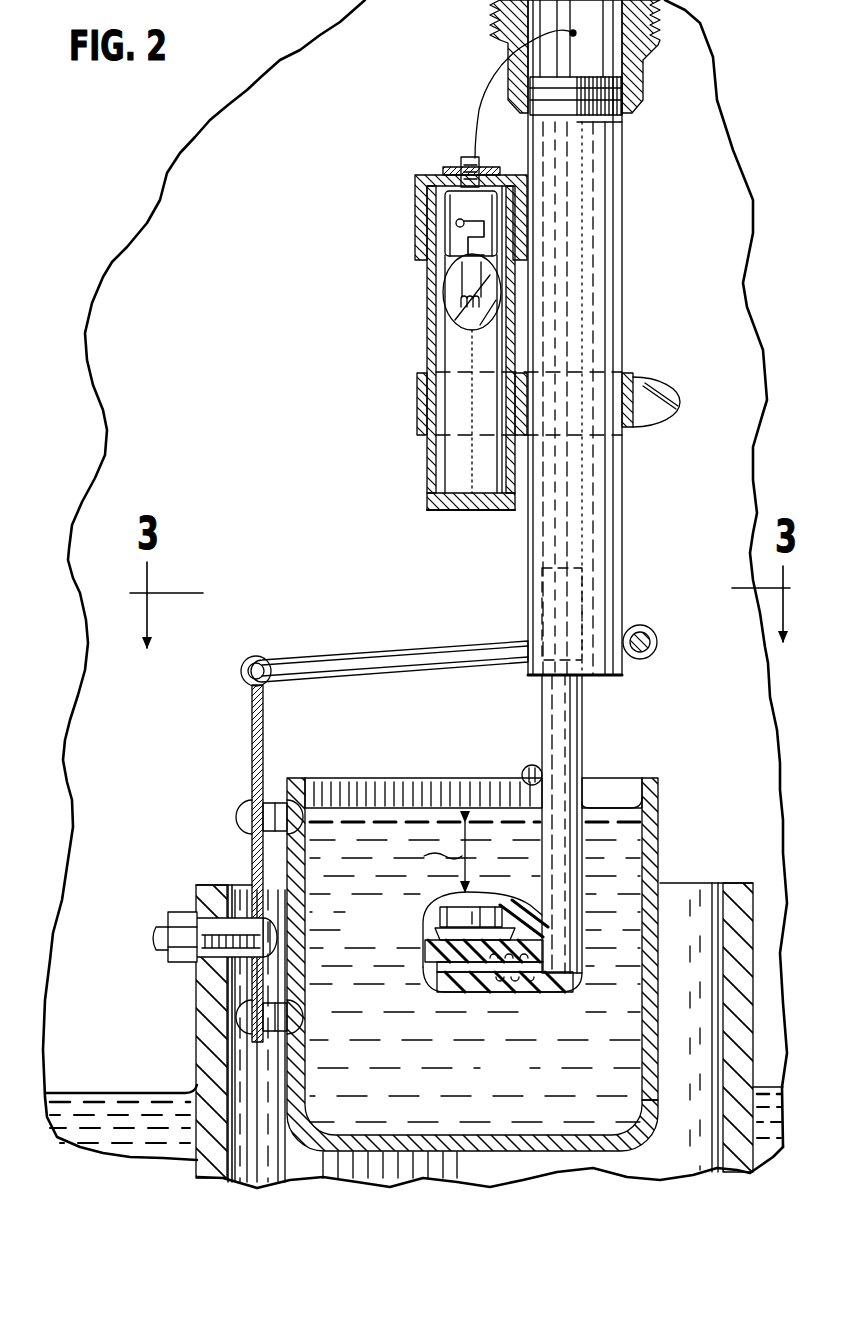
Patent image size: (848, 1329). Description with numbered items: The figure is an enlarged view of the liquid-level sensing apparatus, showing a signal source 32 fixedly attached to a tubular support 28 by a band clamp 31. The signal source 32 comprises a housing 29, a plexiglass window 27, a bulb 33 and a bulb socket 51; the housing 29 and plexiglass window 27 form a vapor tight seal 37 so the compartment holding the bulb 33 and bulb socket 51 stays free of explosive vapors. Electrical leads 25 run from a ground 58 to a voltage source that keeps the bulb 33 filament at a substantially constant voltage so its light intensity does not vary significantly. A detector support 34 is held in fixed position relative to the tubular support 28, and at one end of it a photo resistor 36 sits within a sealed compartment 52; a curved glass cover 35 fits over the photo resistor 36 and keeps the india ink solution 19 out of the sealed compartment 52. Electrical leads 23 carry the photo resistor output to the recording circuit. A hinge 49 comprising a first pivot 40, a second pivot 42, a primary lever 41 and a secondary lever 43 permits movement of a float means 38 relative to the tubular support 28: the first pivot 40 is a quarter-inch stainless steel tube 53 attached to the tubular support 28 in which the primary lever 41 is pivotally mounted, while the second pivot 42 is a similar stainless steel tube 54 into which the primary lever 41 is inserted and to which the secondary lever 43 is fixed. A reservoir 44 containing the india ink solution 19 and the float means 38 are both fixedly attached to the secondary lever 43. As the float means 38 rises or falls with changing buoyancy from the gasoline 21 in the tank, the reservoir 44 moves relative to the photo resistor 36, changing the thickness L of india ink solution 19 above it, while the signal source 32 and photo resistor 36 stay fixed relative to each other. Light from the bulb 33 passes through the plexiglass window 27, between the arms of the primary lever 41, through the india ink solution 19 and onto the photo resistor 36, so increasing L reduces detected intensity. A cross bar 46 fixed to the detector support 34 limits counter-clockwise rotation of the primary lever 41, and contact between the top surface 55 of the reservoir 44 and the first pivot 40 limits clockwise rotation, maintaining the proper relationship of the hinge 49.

The india ink solution 19 is at (524, 1074).
The gasoline 21 is at (135, 1093).
The electrical leads 23 is at (525, 975).
The electrical leads 25 is at (463, 157).
The plexiglass window 27 is at (490, 512).
The tubular support 28 is at (622, 273).
The housing 29 is at (427, 468).
The band clamp 31 is at (420, 405).
The signal source 32 is at (428, 340).
The bulb 33 is at (443, 298).
The detector support 34 is at (542, 705).
The curved glass cover 35 is at (466, 940).
The photo resistor 36 is at (490, 902).
The vapor tight seal 37 is at (430, 511).
The float means 38 is at (196, 1031).
The first pivot 40 is at (660, 638).
The primary lever 41 is at (412, 650).
The second pivot 42 is at (349, 820).
The secondary lever 43 is at (252, 757).
The reservoir 44 is at (405, 776).
The cross bar 46 is at (525, 768).
The hinge 49 is at (349, 799).
The bulb socket 51 is at (452, 210).
The sealed compartment 52 is at (432, 919).
The stainless steel tube 53 is at (640, 626).
The stainless steel tube 54 is at (250, 657).
The top surface 55 is at (652, 778).
The ground 58 is at (420, 176).